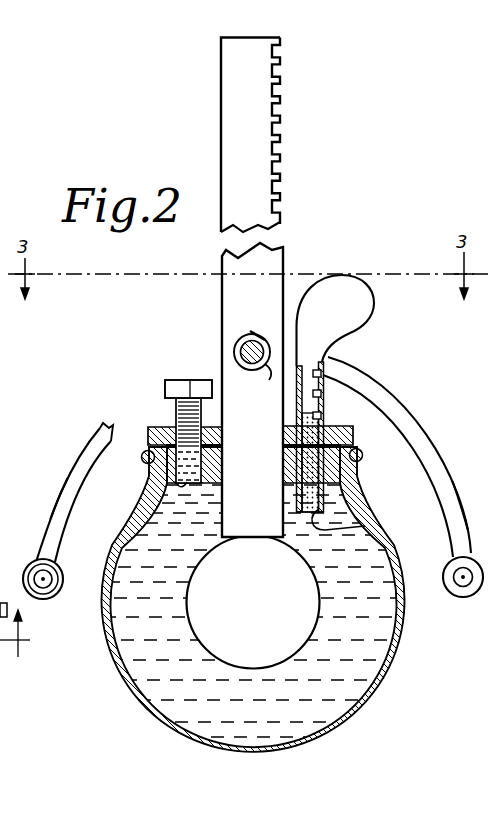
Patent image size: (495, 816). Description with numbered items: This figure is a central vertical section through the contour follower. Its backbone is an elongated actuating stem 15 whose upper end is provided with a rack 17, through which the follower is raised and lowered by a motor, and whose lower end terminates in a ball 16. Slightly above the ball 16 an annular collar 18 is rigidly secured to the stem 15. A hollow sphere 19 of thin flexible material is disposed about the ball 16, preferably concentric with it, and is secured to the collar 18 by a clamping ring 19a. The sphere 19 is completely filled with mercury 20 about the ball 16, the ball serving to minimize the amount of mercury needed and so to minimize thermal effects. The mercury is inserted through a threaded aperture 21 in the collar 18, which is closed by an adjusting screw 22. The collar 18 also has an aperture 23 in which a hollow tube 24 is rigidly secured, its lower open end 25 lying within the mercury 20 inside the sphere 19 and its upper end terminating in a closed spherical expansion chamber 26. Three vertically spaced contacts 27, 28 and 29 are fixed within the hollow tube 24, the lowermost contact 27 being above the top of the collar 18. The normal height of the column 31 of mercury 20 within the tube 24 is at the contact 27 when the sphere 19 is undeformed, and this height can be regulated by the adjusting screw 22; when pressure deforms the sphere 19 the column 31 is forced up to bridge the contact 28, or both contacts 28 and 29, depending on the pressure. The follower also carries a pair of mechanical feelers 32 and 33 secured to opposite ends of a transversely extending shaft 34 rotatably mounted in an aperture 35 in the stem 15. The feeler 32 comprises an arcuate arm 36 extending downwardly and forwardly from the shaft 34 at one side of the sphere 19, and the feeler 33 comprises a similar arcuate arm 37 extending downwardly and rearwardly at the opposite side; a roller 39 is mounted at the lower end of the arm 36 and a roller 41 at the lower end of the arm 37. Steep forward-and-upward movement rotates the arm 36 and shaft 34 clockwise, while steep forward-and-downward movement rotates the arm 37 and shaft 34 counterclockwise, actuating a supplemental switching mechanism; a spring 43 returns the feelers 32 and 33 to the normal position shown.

The actuating stem 15 is at (254, 288).
The ball 16 is at (268, 631).
The rack 17 is at (282, 136).
The annular collar 18 is at (170, 427).
The hollow sphere 19 is at (397, 652).
The clamping ring 19a is at (141, 458).
The mercury 20 is at (140, 666).
The threaded aperture 21 is at (180, 485).
The adjusting screw 22 is at (172, 388).
The aperture 23 is at (283, 474).
The hollow tube 24 is at (297, 405).
The lower open end 25 is at (365, 526).
The closed spherical expansion chamber 26 is at (358, 320).
The contact 27 is at (322, 416).
The contact 28 is at (322, 393).
The contact 29 is at (321, 372).
The column of mercury 31 is at (312, 437).
The mechanical feeler 32 is at (438, 454).
The mechanical feeler 33 is at (79, 451).
The transversely extending shaft 34 is at (234, 350).
The aperture 35 is at (252, 334).
The arcuate arm 36 is at (455, 512).
The arcuate arm 37 is at (57, 500).
The roller 39 is at (465, 597).
The roller 41 is at (50, 598).
The spring 43 is at (254, 382).